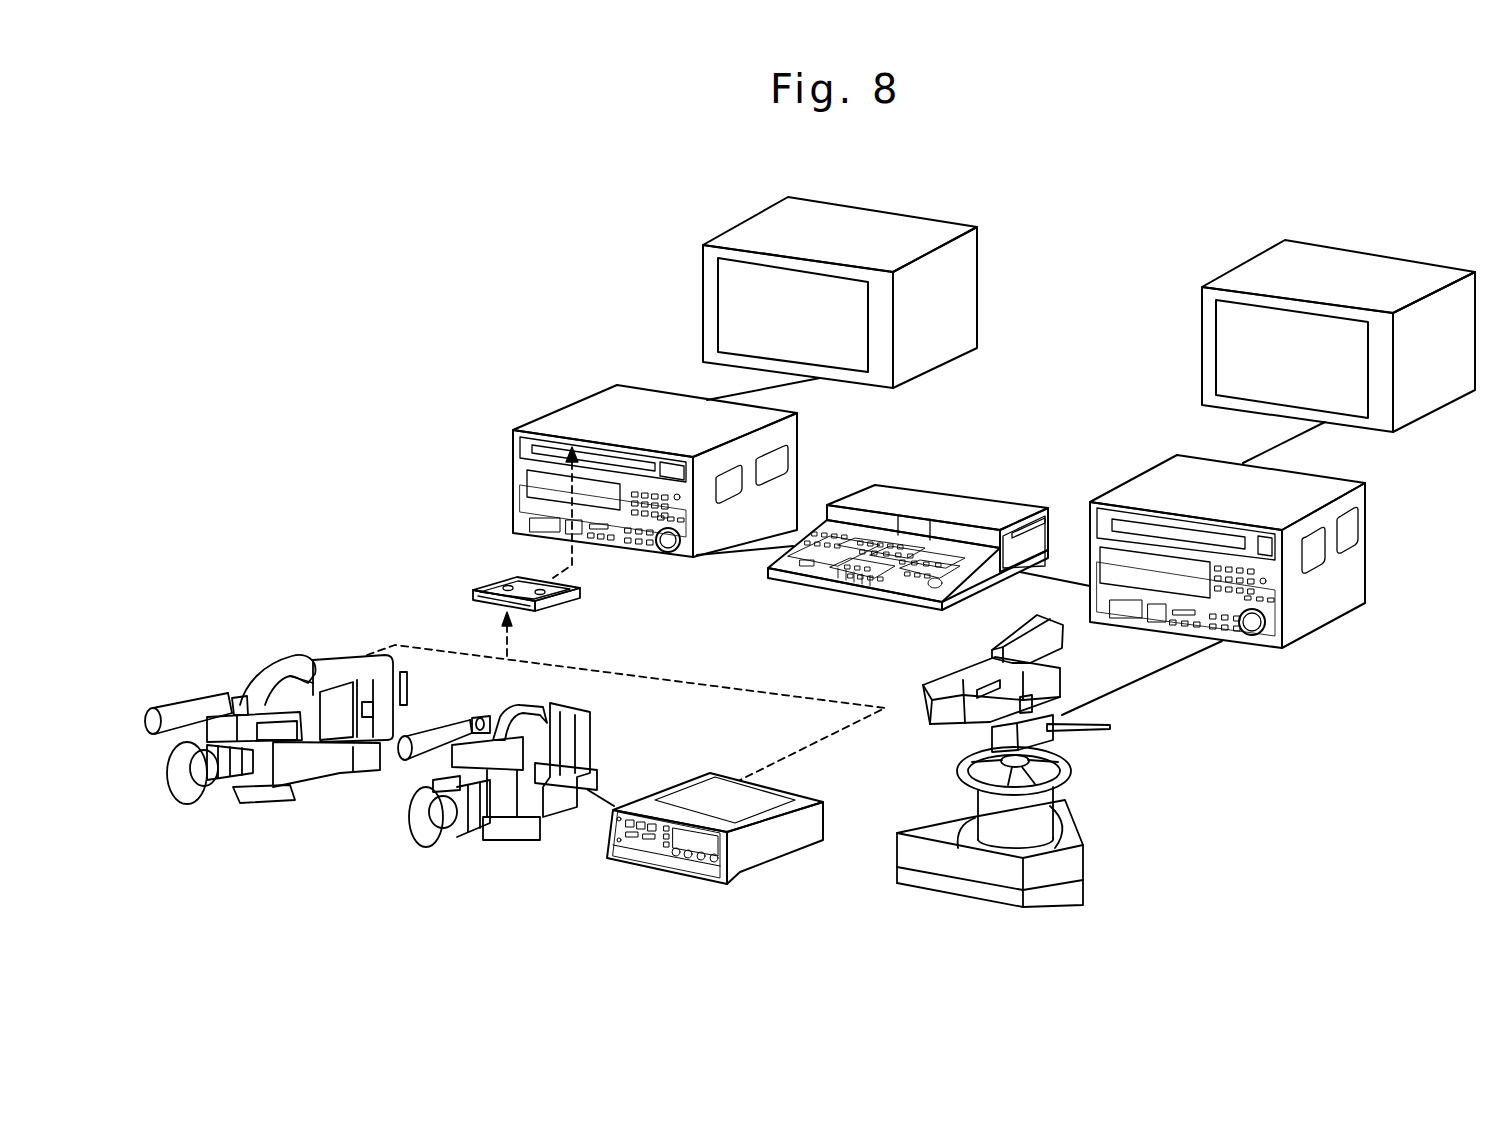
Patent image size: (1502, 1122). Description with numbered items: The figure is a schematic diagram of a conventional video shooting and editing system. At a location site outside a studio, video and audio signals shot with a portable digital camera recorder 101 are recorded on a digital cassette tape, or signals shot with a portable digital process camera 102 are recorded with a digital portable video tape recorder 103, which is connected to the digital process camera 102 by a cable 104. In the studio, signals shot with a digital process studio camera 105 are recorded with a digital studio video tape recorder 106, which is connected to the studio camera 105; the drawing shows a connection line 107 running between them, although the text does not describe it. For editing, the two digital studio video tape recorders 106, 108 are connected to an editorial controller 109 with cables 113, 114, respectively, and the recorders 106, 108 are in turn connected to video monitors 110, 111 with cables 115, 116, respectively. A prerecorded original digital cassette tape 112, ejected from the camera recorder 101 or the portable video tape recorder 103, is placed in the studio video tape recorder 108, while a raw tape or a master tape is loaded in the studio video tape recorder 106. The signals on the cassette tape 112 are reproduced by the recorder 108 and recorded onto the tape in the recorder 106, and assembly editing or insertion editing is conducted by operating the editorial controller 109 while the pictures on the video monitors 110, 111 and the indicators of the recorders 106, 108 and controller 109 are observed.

The portable digital camera recorder 101 is at (277, 665).
The portable digital process camera 102 is at (495, 838).
The digital portable video tape recorder 103 is at (777, 838).
The cable 104 is at (610, 798).
The digital process studio camera 105 is at (1033, 812).
The digital studio video tape recorder 106 is at (1320, 610).
The cable 107 is at (1152, 688).
The digital studio video tape recorder 108 is at (578, 418).
The editorial controller 109 is at (937, 502).
The video monitor 110 is at (1380, 268).
The video monitor 111 is at (887, 223).
The prerecorded original digital cassette tape 112 is at (505, 588).
The cable 113 is at (1063, 573).
The cable 114 is at (783, 548).
The cable 115 is at (1293, 440).
The cable 116 is at (735, 390).